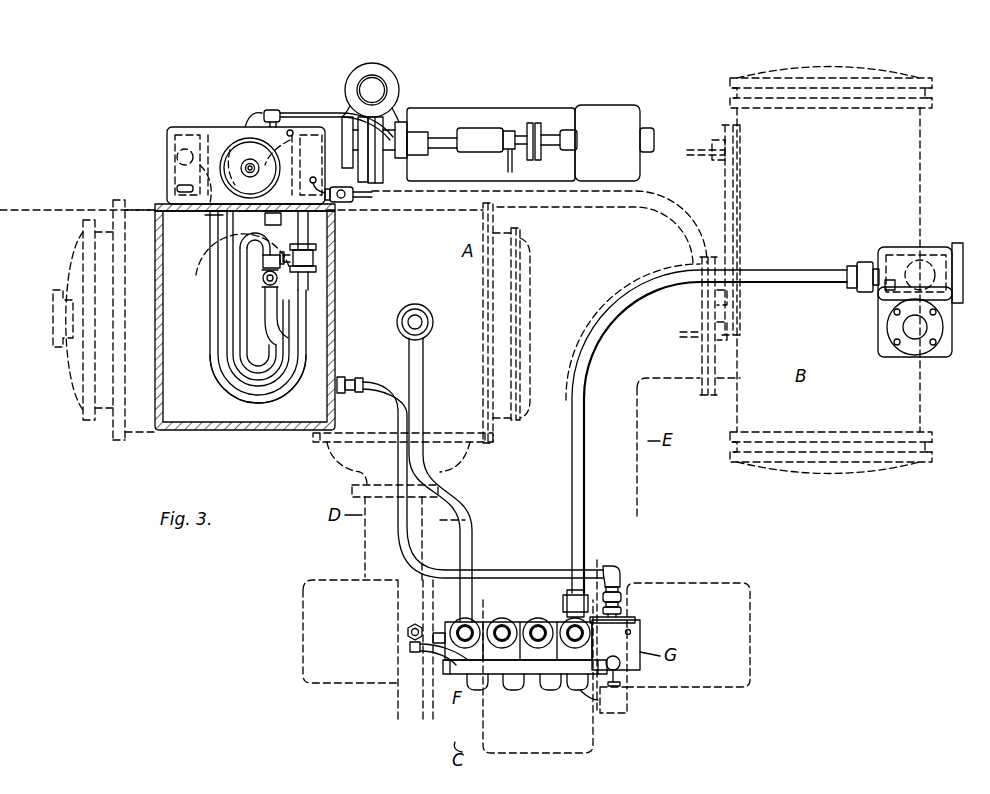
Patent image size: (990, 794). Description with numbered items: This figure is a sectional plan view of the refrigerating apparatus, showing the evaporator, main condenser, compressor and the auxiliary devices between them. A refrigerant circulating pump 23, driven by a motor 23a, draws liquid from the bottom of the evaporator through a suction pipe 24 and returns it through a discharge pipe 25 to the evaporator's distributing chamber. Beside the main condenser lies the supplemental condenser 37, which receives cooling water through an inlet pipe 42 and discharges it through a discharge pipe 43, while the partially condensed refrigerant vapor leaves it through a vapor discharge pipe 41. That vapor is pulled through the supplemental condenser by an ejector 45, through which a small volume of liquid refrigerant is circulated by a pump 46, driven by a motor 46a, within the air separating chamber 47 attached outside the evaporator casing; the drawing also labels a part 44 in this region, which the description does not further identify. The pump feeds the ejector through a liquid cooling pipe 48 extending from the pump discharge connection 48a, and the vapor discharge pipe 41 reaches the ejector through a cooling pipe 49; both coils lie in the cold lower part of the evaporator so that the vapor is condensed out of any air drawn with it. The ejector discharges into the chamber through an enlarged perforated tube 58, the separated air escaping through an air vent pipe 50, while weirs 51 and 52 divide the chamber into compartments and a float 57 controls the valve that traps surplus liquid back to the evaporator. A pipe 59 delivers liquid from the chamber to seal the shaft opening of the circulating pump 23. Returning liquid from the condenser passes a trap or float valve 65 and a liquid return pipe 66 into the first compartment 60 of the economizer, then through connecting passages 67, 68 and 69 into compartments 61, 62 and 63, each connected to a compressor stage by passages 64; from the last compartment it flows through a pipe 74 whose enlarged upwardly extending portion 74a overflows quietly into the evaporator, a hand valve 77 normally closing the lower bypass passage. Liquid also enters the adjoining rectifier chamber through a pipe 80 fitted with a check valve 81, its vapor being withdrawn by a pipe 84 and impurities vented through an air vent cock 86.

The refrigerant circulating pump 23 is at (374, 184).
The motor 23a is at (530, 143).
The suction pipe 24 is at (333, 127).
The discharge pipe 25 is at (377, 92).
The supplemental condenser 37 is at (740, 180).
The vapor discharge pipe 41 is at (614, 200).
The inlet pipe 42 is at (683, 333).
The discharge pipe 43 is at (712, 148).
The tank 44 is at (245, 317).
The ejector 45 is at (316, 258).
The pump 46 is at (200, 212).
The motor 46a is at (251, 158).
The air separating chamber 47 is at (208, 124).
The liquid cooling pipe 48 is at (212, 326).
The pump discharge connection 48a is at (228, 266).
The cooling pipe 49 is at (243, 363).
The air vent pipe 50 is at (338, 203).
The weir 51 is at (289, 129).
The weir 52 is at (214, 136).
The float 57 is at (175, 157).
The enlarged perforated tube 58 is at (326, 112).
The pipe 59 is at (288, 110).
The first compartment 60 is at (536, 653).
The compartment 61 is at (533, 653).
The compartment 62 is at (500, 650).
The last compartment 63 is at (460, 652).
The passages 64 is at (570, 620).
The trap or float valve 65 is at (935, 260).
The liquid return pipe 66 is at (792, 270).
The connecting passage 67 is at (583, 690).
The connecting passage 68 is at (540, 690).
The connecting passage 69 is at (492, 690).
The pipe 74 is at (465, 512).
The enlarged upwardly extending portion 74a is at (428, 316).
The hand valve 77 is at (410, 644).
The pipe 80 is at (520, 571).
The check valve 81 is at (625, 612).
The pipe 84 is at (563, 674).
The air vent cock 86 is at (637, 621).